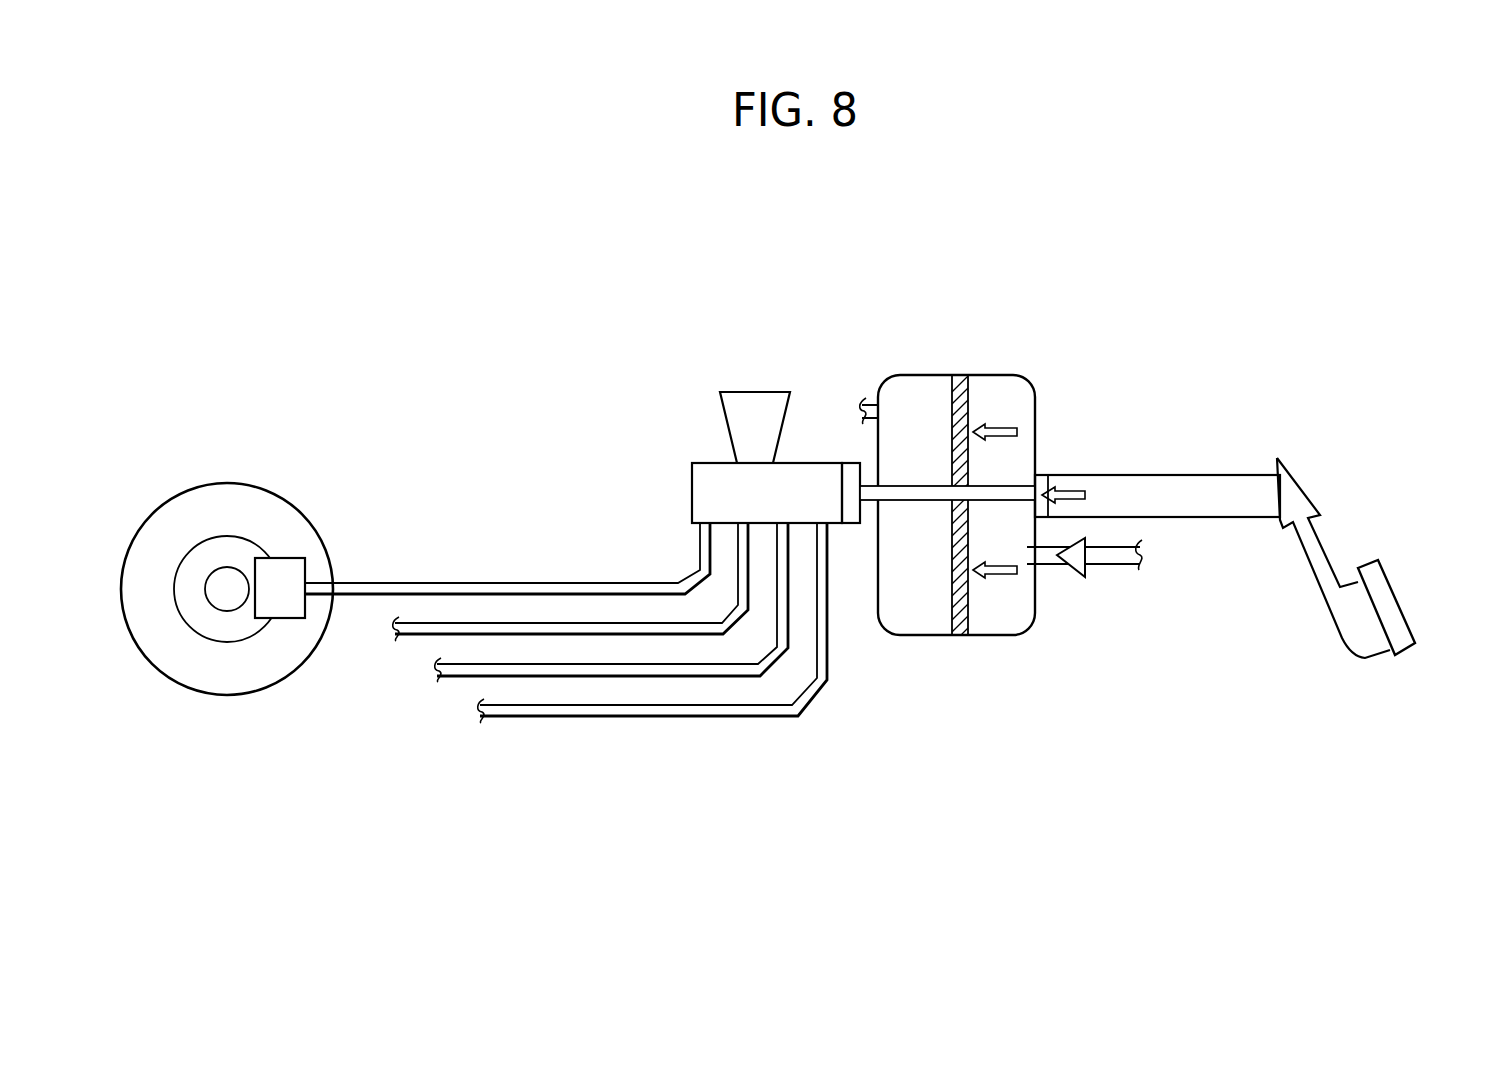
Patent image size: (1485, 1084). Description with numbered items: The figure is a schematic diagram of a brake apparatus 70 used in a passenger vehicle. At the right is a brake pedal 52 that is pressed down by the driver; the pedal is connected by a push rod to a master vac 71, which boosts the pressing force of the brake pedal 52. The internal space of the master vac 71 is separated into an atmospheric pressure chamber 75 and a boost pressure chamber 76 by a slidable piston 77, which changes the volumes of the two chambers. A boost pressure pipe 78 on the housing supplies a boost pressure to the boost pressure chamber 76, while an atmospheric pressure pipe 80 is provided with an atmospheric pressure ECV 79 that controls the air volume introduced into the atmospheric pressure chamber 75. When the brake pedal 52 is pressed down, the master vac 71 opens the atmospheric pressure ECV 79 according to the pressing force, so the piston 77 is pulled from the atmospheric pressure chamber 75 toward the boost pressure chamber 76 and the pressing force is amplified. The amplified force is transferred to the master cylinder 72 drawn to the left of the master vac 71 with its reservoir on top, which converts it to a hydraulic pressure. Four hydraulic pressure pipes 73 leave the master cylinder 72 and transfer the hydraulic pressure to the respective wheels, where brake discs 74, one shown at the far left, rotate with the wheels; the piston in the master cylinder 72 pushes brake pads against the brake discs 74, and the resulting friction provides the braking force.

The brake apparatus 70 is at (1140, 326).
The master vac 71 is at (1017, 373).
The master cylinder 72 is at (752, 390).
The hydraulic pressure pipes 73 is at (490, 582).
The brake discs 74 is at (240, 483).
The atmospheric pressure chamber 75 is at (1008, 622).
The boost pressure chamber 76 is at (920, 622).
The piston 77 is at (950, 388).
The boost pressure pipe 78 is at (862, 404).
The atmospheric pressure ECV 79 is at (1075, 578).
The atmospheric pressure pipe 80 is at (1122, 568).
The brake pedal 52 is at (1390, 592).